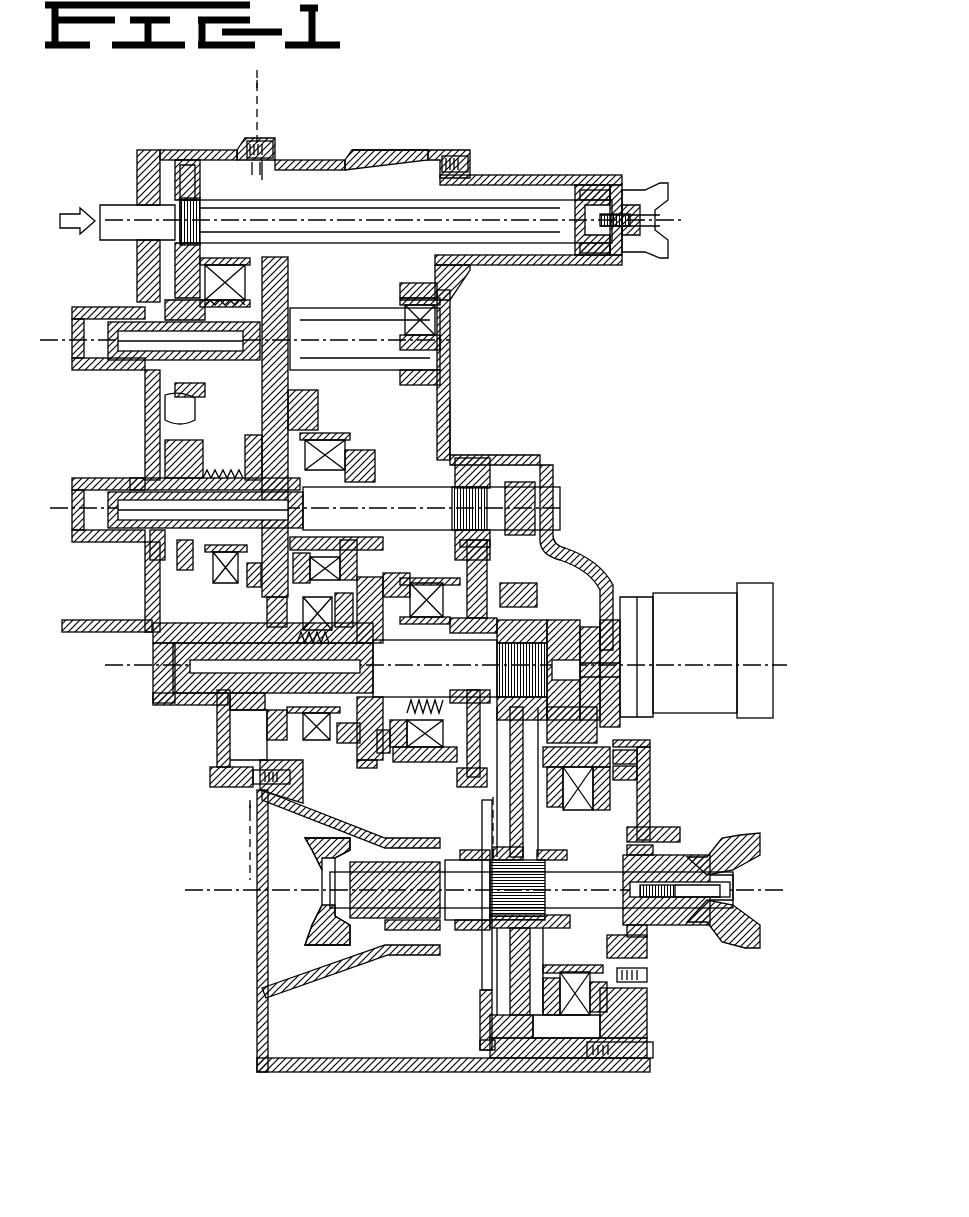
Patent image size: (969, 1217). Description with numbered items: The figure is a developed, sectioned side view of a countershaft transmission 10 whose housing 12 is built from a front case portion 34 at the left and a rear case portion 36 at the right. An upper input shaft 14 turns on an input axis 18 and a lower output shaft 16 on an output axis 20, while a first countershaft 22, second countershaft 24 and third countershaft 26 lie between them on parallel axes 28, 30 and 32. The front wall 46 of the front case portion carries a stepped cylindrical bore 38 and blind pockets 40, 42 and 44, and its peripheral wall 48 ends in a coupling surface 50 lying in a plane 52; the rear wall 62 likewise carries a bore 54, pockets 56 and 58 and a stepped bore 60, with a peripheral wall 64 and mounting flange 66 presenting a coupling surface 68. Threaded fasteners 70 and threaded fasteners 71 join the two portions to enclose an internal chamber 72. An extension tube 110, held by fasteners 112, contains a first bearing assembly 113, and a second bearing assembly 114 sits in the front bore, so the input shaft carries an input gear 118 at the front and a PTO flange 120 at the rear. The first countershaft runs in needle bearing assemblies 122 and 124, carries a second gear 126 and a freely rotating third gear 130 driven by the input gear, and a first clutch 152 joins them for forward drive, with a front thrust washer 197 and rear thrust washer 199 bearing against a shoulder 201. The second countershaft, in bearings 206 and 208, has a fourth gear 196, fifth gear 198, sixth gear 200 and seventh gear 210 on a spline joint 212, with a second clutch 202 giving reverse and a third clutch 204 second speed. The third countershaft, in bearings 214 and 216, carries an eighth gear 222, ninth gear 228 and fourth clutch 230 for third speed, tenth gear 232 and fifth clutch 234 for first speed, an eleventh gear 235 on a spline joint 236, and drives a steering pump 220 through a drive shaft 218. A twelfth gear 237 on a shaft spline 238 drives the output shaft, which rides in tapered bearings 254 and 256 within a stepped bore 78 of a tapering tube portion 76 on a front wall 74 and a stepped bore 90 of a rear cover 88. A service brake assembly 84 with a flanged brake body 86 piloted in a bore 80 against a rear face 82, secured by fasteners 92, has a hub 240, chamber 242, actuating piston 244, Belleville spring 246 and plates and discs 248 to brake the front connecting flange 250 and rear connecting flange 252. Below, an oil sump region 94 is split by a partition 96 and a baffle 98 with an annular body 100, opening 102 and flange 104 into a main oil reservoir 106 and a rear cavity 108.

The countershaft transmission 10 is at (540, 118).
The housing 12 is at (135, 165).
The input shaft 14 is at (392, 205).
The output shaft 16 is at (490, 852).
The input axis 18 is at (672, 222).
The output axis 20 is at (205, 885).
The first countershaft 22 is at (320, 320).
The second countershaft 24 is at (414, 490).
The third countershaft 26 is at (438, 664).
The axis of first countershaft 28 is at (472, 345).
The axis of second countershaft 30 is at (572, 510).
The axis of third countershaft 32 is at (680, 662).
The front case portion 34 is at (148, 410).
The rear case portion 36 is at (448, 392).
The stepped cylindrical bore 38 is at (130, 238).
The stepped pocket 40 is at (78, 330).
The stepped pocket 42 is at (105, 540).
The stepped pocket 44 is at (158, 698).
The front wall 46 is at (150, 570).
The peripheral wall 48 is at (178, 150).
The coupling surface 50 is at (258, 145).
The plane 52 is at (258, 78).
The cylindrical bore 54 is at (462, 262).
The pocket 56 is at (448, 330).
The pocket 58 is at (522, 496).
The stepped cylindrical bore 60 is at (610, 630).
The rear wall 62 is at (448, 412).
The peripheral wall 64 is at (398, 150).
The mounting flange 66 is at (262, 166).
The coupling surface 68 is at (256, 165).
The threaded fasteners 70 is at (276, 158).
The threaded fasteners 71 is at (210, 776).
The internal chamber 72 is at (382, 398).
The front wall 74 is at (258, 1010).
The tube portion 76 is at (290, 975).
The stepped cylindrical bore 78 is at (405, 935).
The cylindrical bore 80 is at (590, 748).
The rear face 82 is at (612, 738).
The service brake assembly 84 is at (655, 806).
The flanged brake body 86 is at (555, 1040).
The rear cover 88 is at (640, 1037).
The stepped cylindrical bore 90 is at (652, 950).
The threaded fasteners 92 is at (655, 1052).
The oil sump region 94 is at (308, 1057).
The partition 96 is at (480, 1030).
The baffle 98 is at (482, 972).
The annular body 100 is at (492, 840).
The cylindrical opening 102 is at (490, 935).
The flange 104 is at (510, 1055).
The main oil reservoir 106 is at (390, 1019).
The rear cavity 108 is at (537, 960).
The extension tube 110 is at (562, 178).
The threaded fasteners 112 is at (472, 165).
The first bearing assembly 113 is at (590, 266).
The second bearing assembly 114 is at (140, 185).
The input gear 118 is at (190, 165).
The PTO flange 120 is at (665, 258).
The needle bearing assembly 122 is at (150, 362).
The needle bearing assembly 124 is at (452, 350).
The second gear 126 is at (292, 262).
The third gear 130 is at (188, 410).
The first clutch 152 is at (236, 276).
The fourth gear 196 is at (292, 595).
The front thrust washer 197 is at (165, 297).
The fifth gear 198 is at (185, 582).
The rear thrust washer 199 is at (400, 375).
The sixth gear 200 is at (360, 447).
The shoulder 201 is at (418, 300).
The second clutch 202 is at (215, 590).
The third clutch 204 is at (332, 445).
The needle bearing assembly 206 is at (150, 478).
The needle bearing assembly 208 is at (522, 520).
The seventh gear 210 is at (478, 462).
The spline joint 212 is at (452, 525).
The needle bearing assembly 214 is at (215, 720).
The roller bearing assembly 216 is at (600, 622).
The steering pump drive shaft 218 is at (495, 696).
The steering pump 220 is at (747, 590).
The eighth gear 222 is at (366, 770).
The ninth gear 228 is at (270, 742).
The fourth clutch 230 is at (320, 740).
The tenth gear 232 is at (457, 786).
The fifth clutch 234 is at (430, 586).
The eleventh gear 235 is at (520, 582).
The spline joint 236 is at (530, 627).
The twelfth gear 237 is at (490, 1042).
The shaft spline 238 is at (500, 890).
The hub 240 is at (568, 868).
The chamber 242 is at (637, 762).
The actuating piston 244 is at (637, 783).
The Belleville compression spring 246 is at (620, 988).
The plates and discs 248 is at (577, 812).
The front connecting flange 250 is at (305, 930).
The rear connecting flange 252 is at (745, 948).
The tapered bearing assembly 254 is at (438, 905).
The tapered bearing assembly 256 is at (622, 925).